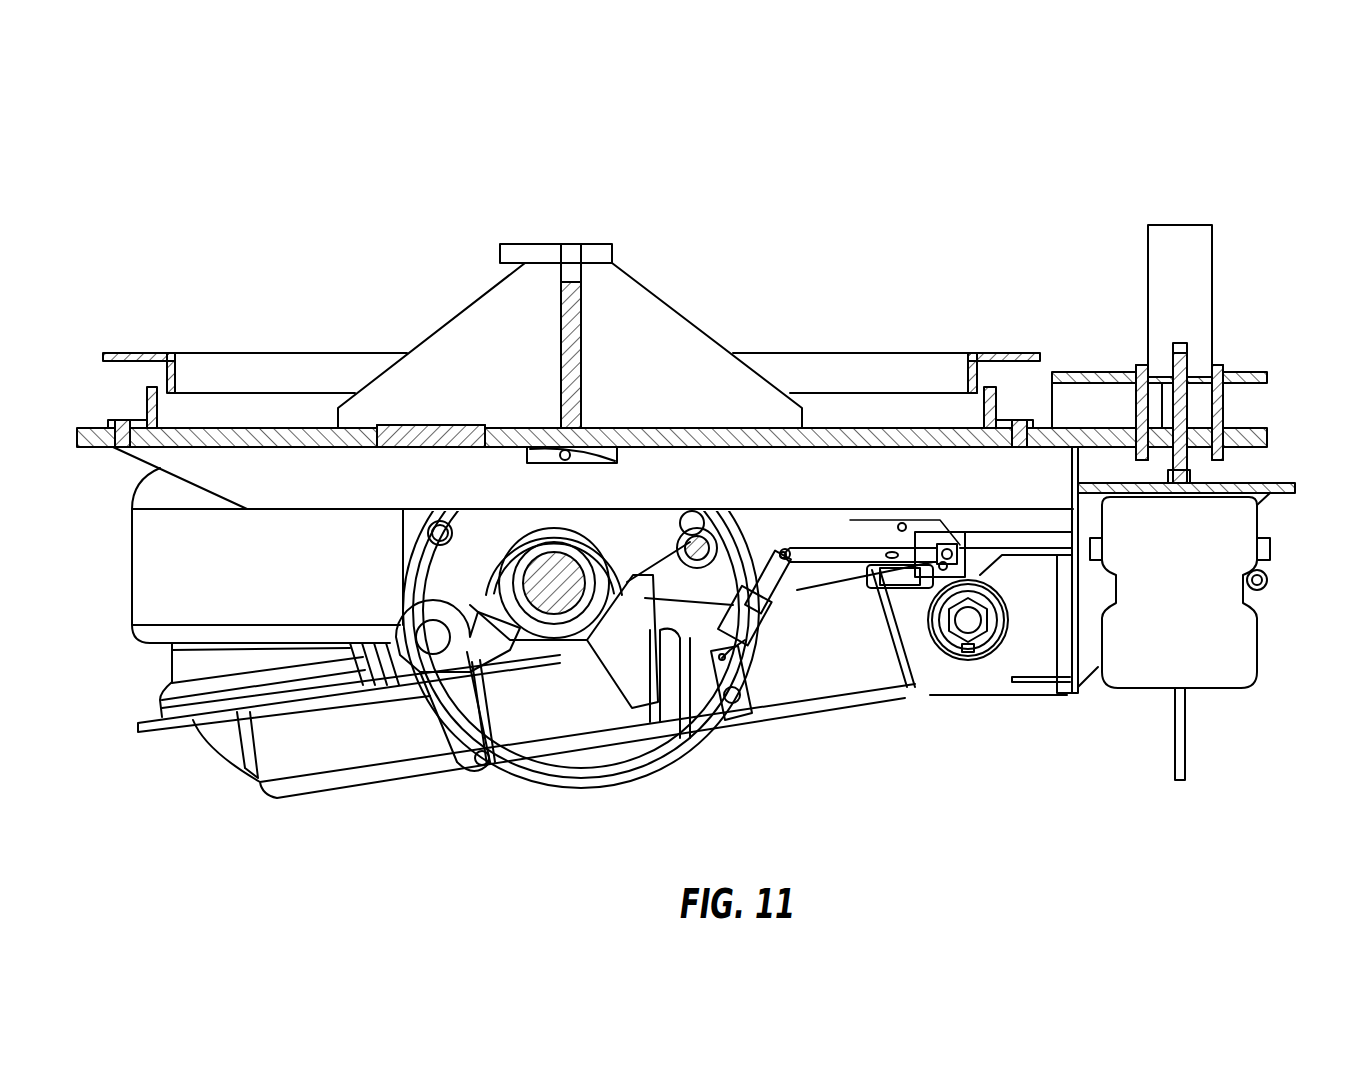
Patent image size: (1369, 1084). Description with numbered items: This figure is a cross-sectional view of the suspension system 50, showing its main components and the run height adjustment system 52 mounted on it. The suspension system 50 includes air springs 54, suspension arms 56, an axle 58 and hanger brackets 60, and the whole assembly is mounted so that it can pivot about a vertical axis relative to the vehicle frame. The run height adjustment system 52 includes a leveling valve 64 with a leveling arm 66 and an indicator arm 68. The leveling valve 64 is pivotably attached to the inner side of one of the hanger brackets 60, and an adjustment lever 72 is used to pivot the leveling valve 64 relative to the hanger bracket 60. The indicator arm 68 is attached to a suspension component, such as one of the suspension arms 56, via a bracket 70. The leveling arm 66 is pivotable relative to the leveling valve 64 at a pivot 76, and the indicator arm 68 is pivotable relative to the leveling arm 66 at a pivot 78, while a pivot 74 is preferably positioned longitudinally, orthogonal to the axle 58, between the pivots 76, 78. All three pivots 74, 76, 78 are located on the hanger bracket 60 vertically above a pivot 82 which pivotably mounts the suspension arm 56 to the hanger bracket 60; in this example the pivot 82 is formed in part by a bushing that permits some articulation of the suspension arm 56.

The suspension system 50 is at (1286, 162).
The run height adjustment system 52 is at (868, 596).
The air spring 54 is at (130, 546).
The suspension arm 56 is at (370, 786).
The axle 58 is at (532, 637).
The hanger bracket 60 is at (1017, 695).
The leveling valve 64 is at (953, 540).
The leveling arm 66 is at (838, 546).
The indicator arm 68 is at (777, 650).
The bracket 70 is at (713, 713).
The adjustment lever 72 is at (1040, 530).
The pivot 74 is at (902, 524).
The pivot 76 is at (962, 540).
The pivot 78 is at (780, 546).
The pivot 82 is at (1003, 585).